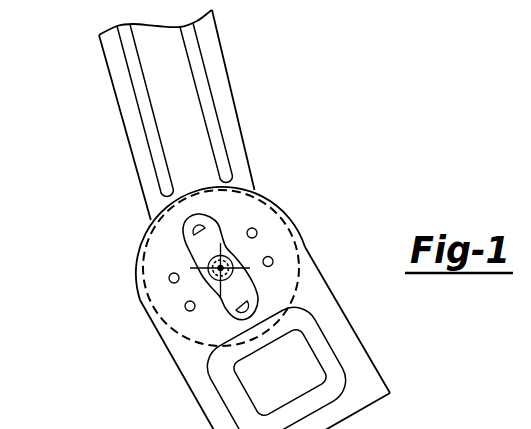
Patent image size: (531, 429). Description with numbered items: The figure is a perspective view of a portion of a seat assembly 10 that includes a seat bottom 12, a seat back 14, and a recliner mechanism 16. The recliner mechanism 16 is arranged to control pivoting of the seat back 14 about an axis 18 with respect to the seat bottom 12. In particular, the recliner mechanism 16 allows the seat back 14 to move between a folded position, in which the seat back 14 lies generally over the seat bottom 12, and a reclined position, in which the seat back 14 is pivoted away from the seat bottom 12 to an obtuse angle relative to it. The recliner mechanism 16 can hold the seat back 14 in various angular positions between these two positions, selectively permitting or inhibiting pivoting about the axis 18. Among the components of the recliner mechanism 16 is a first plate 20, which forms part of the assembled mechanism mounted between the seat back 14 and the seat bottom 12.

The seat assembly 10 is at (272, 219).
The seat bottom 12 is at (360, 338).
The seat back 14 is at (221, 51).
The recliner mechanism 16 is at (303, 221).
The axis 18 is at (215, 265).
The first plate 20 is at (240, 290).